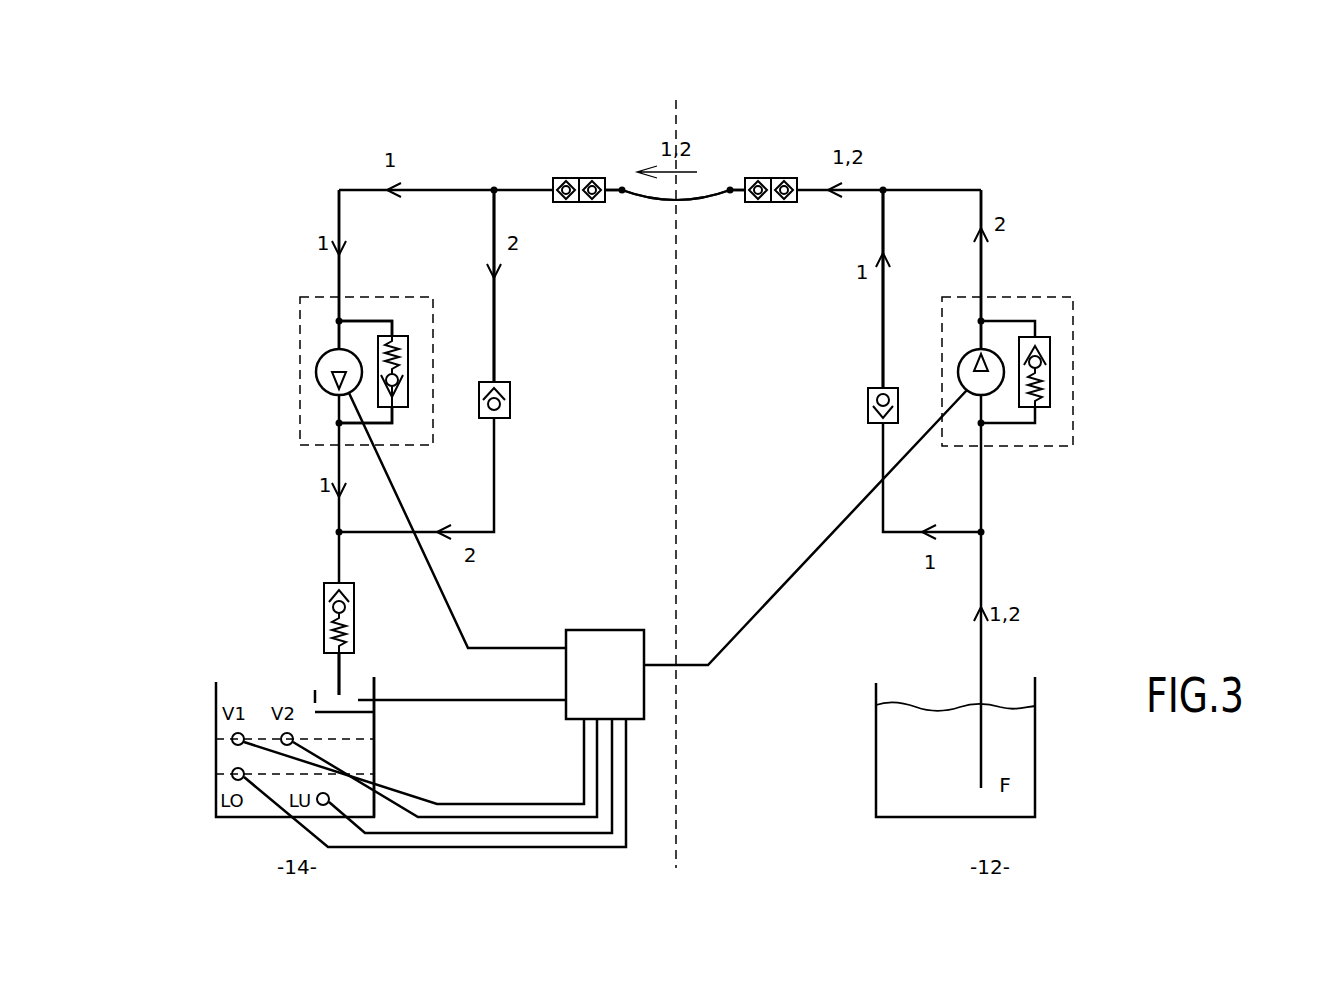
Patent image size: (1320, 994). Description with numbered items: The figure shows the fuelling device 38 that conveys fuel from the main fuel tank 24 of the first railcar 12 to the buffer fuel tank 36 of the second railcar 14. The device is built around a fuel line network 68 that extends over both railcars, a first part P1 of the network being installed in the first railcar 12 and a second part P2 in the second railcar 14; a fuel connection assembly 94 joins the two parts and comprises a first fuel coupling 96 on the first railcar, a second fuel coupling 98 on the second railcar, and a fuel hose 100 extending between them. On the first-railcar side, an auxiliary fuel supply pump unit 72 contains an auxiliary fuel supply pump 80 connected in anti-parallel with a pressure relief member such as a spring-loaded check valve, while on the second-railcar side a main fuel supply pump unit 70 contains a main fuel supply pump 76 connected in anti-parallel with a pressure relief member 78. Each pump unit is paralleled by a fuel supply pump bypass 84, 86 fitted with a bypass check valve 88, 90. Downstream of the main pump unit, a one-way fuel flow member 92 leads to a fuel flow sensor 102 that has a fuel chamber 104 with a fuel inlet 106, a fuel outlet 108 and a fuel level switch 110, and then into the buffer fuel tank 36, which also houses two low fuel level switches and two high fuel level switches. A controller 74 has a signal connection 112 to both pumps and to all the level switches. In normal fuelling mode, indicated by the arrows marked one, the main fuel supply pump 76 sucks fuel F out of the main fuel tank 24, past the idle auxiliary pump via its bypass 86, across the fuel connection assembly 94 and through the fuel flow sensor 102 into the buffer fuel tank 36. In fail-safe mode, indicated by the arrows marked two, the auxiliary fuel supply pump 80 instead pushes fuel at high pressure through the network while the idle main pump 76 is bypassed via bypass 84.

The first railcar 12 is at (912, 765).
The second railcar 14 is at (272, 778).
The main fuel tank 24 is at (876, 795).
The buffer fuel tank 36 is at (258, 817).
The fuelling device 38 is at (258, 323).
The fuel line network 68 is at (763, 212).
The main fuel supply pump unit 70 is at (300, 338).
The auxiliary fuel supply pump unit 72 is at (1073, 315).
The controller 74 is at (444, 738).
The main fuel supply pump 76 is at (325, 376).
The pressure relief member 78 is at (408, 343).
The auxiliary fuel supply pump 80 is at (963, 362).
The fuel supply pump bypass 84 is at (495, 332).
The fuel supply pump bypass 86 is at (883, 223).
The bypass check valve 88 is at (510, 393).
The bypass check valve 90 is at (868, 413).
The one-way fuel flow member 92 is at (323, 623).
The fuel connection assembly 94 is at (627, 96).
The first fuel coupling 96 is at (792, 178).
The second fuel coupling 98 is at (583, 178).
The fuel hose 100 is at (730, 188).
The fuel flow sensor 102 is at (362, 673).
The fuel chamber 104 is at (360, 700).
The fuel inlet 106 is at (337, 690).
The fuel outlet 108 is at (315, 712).
The fuel level switch 110 is at (373, 700).
The signal connection 112 is at (447, 593).
The first part of the network P1 is at (915, 130).
The second part of the network P2 is at (470, 137).